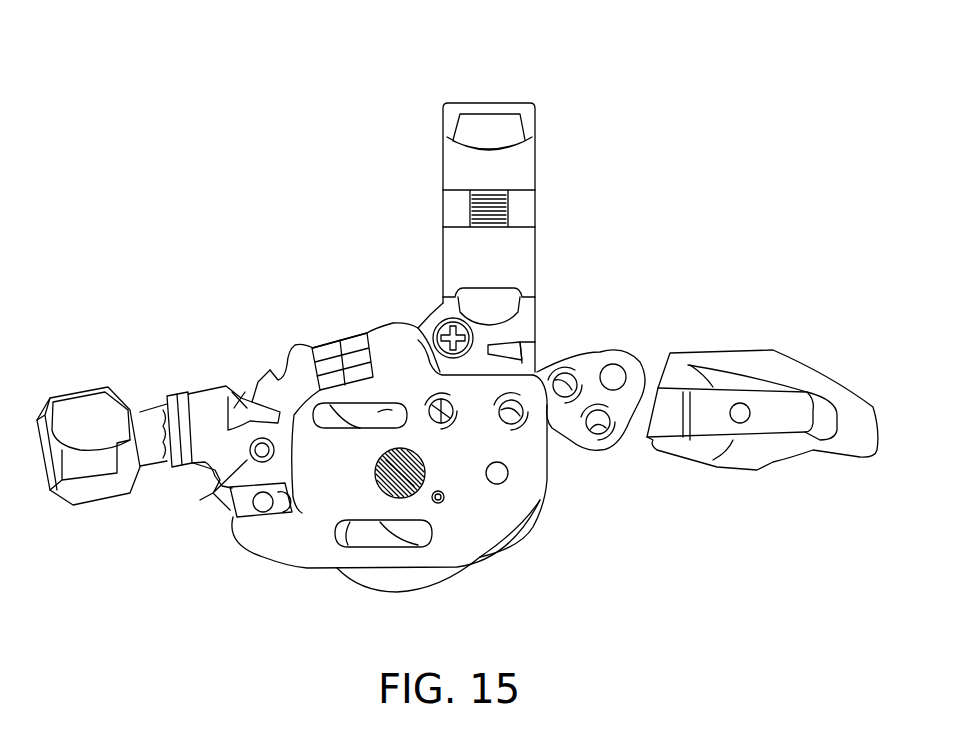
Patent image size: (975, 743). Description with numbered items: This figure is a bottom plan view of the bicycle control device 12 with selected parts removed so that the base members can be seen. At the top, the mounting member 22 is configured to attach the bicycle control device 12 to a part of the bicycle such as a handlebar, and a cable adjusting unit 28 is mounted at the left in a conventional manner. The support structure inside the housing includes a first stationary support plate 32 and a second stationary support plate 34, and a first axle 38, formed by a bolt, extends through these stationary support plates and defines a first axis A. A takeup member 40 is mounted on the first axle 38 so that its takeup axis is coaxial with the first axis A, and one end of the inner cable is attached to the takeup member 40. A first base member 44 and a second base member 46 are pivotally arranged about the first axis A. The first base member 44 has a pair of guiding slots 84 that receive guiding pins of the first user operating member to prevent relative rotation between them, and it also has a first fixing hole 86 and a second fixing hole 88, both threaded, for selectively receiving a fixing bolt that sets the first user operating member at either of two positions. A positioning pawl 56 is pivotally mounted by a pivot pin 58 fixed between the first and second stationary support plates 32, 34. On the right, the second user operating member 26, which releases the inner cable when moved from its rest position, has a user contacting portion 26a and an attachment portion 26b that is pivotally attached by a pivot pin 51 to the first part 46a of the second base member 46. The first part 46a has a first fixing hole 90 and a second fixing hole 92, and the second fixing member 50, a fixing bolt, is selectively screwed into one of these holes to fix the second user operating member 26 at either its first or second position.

The bicycle control device 12 is at (642, 95).
The mounting member 22 is at (440, 157).
The second user operating member 26 is at (773, 465).
The user contacting portion 26a is at (842, 452).
The attachment portion 26b is at (647, 433).
The cable adjusting unit 28 is at (80, 387).
The first stationary support plate 32 is at (212, 385).
The second stationary support plate 34 is at (182, 393).
The first axle 38 is at (420, 468).
The takeup member 40 is at (425, 592).
The first base member 44 is at (243, 540).
The second base member 46 is at (545, 358).
The first part 46a is at (562, 420).
The second fixing member 50 is at (598, 432).
The pivot pin 51 is at (618, 375).
The positioning pawl 56 is at (240, 400).
The pivot pin 58 is at (212, 492).
The guiding slot 84 is at (350, 427).
The first fixing hole 86 is at (428, 405).
The second fixing hole 88 is at (515, 425).
The first fixing hole 90 is at (607, 427).
The second fixing hole 92 is at (568, 378).
The first axis A is at (378, 472).